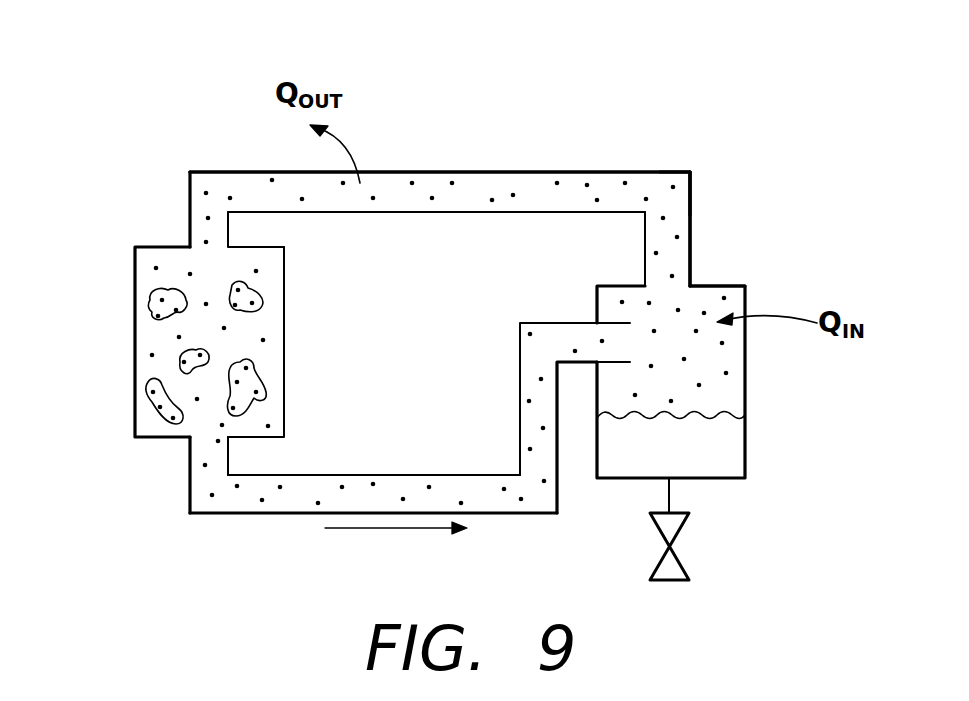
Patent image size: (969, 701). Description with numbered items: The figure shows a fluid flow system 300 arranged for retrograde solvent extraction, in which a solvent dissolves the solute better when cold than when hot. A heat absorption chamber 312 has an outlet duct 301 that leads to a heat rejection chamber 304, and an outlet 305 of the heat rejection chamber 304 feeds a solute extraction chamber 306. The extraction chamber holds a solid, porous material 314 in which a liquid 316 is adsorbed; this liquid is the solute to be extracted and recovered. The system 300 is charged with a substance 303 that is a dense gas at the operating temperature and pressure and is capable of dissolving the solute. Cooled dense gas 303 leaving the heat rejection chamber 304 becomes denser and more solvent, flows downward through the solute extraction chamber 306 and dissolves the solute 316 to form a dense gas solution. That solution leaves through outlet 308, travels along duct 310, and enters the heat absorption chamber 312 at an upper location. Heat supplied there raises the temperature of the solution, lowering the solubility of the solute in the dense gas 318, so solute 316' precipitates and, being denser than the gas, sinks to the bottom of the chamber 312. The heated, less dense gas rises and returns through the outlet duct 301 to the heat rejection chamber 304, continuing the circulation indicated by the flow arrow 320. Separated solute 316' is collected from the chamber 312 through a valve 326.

The fluid flow system 300 is at (755, 98).
The outlet duct 301 is at (692, 220).
The dense gas substance 303 is at (658, 185).
The heat rejection chamber 304 is at (485, 172).
The outlet of heat rejection chamber 305 is at (230, 229).
The solute extraction chamber 306 is at (133, 280).
The outlet 308 is at (215, 463).
The duct 310 is at (300, 513).
The heat absorption chamber 312 is at (745, 385).
The solid porous material 314 is at (148, 305).
The liquid solute 316 is at (172, 347).
The separated solute 316' is at (671, 434).
The dense gas 318 is at (530, 353).
The flow direction 320 is at (370, 530).
The valve 326 is at (683, 520).